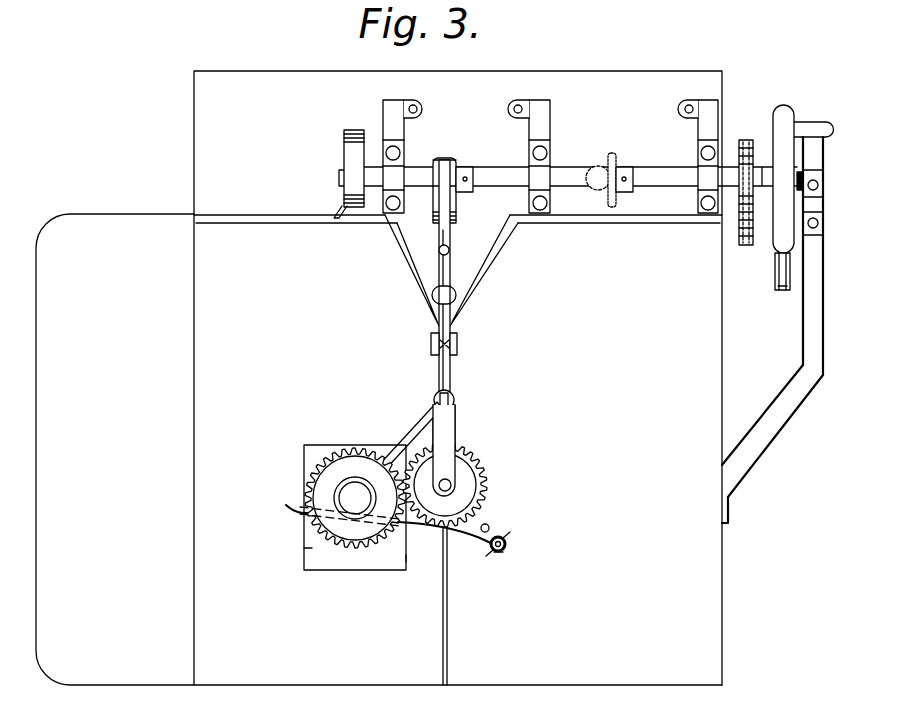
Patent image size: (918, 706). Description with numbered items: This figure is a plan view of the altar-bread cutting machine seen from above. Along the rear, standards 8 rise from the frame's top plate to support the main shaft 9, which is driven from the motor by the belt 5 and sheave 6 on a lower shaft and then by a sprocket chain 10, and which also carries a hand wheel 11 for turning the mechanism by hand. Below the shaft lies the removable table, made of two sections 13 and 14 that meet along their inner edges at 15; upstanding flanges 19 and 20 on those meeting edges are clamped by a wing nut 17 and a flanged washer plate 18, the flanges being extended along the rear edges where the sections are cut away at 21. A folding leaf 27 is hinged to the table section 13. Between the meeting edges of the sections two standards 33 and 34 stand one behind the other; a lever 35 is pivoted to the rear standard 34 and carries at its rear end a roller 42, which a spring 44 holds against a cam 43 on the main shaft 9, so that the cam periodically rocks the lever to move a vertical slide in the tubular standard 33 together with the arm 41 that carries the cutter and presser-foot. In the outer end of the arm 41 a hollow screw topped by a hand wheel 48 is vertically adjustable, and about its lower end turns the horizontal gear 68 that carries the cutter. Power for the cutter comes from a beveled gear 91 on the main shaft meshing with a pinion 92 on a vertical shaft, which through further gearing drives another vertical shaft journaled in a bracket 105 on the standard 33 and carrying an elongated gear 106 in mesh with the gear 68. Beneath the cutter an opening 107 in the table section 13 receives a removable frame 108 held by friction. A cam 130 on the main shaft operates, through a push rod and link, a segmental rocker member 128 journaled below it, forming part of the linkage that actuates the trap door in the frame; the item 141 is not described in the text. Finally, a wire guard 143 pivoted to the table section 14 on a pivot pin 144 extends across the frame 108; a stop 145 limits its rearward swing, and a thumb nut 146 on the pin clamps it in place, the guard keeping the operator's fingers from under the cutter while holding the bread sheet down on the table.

The belt 5 is at (782, 290).
The sheave 6 is at (774, 270).
The standards 8 is at (383, 113).
The main shaft 9 is at (660, 171).
The sprocket chain 10 is at (747, 140).
The hand wheel 11 is at (782, 108).
The table section 13 is at (285, 401).
The table section 14 is at (606, 448).
The meeting edges 15 is at (449, 599).
The wing nut 17 is at (457, 340).
The flanged washer plate 18 is at (458, 351).
The upstanding flange 19 is at (283, 226).
The upstanding flange 20 is at (590, 226).
The cut-away portion 21 is at (397, 258).
The folding leaf 27 is at (90, 464).
The standard 33 is at (456, 402).
The standard 34 is at (457, 290).
The lever 35 is at (451, 268).
The arm 41 is at (410, 430).
The roller 42 is at (458, 186).
The cam 43 is at (445, 156).
The spring 44 is at (449, 250).
The hand wheel 48 is at (340, 477).
The horizontal gear 68 is at (306, 471).
The beveled gear 91 is at (611, 153).
The pinion 92 is at (601, 168).
The bracket 105 is at (456, 436).
The elongated gear 106 is at (488, 497).
The opening 107 is at (452, 484).
The frame 108 is at (302, 553).
The segmental rocker member 128 is at (340, 207).
The cam 130 is at (343, 143).
The cord 141 is at (287, 508).
The guard 143 is at (413, 530).
The pivot pin 144 is at (502, 553).
The stop 145 is at (490, 527).
The thumb nut 146 is at (506, 544).